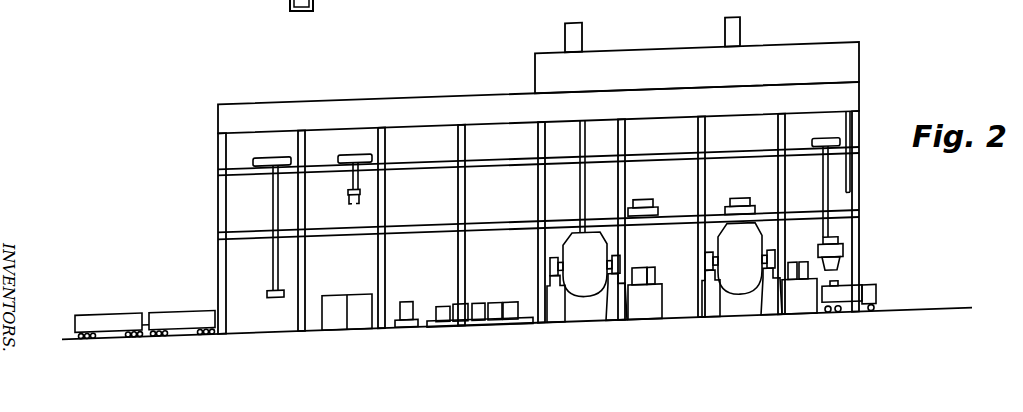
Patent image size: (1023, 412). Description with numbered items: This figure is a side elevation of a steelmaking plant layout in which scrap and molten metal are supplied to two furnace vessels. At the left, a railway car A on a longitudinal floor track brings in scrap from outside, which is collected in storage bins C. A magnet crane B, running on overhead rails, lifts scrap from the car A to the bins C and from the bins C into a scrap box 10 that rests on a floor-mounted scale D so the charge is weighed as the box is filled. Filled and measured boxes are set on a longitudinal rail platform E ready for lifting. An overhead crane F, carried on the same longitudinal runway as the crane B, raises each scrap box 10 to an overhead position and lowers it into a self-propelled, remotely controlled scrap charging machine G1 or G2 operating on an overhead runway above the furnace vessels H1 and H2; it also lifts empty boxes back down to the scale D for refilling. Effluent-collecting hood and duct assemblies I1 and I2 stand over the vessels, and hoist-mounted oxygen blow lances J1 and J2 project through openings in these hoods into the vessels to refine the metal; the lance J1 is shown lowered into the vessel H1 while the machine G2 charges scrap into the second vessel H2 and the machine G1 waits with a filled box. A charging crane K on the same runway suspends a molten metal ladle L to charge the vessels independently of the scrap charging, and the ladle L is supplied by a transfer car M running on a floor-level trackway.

The railway car A is at (125, 316).
The magnet crane B is at (268, 153).
The storage bins C is at (356, 322).
The floor-mounted scale D is at (404, 326).
The rail platform E is at (458, 327).
The scrap box 10 is at (507, 301).
The overhead crane F is at (345, 152).
The scrap charging machine G1 is at (657, 210).
The scrap charging machine G2 is at (756, 208).
The furnace vessel H1 is at (592, 290).
The furnace vessel H2 is at (741, 290).
The hood and duct assembly I1 is at (590, 7).
The hood and duct assembly I2 is at (742, 19).
The oxygen blow lance J1 is at (587, 134).
The oxygen blow lance J2 is at (851, 187).
The charging crane K is at (821, 137).
The charging ladle L is at (845, 266).
The transfer car M is at (878, 297).